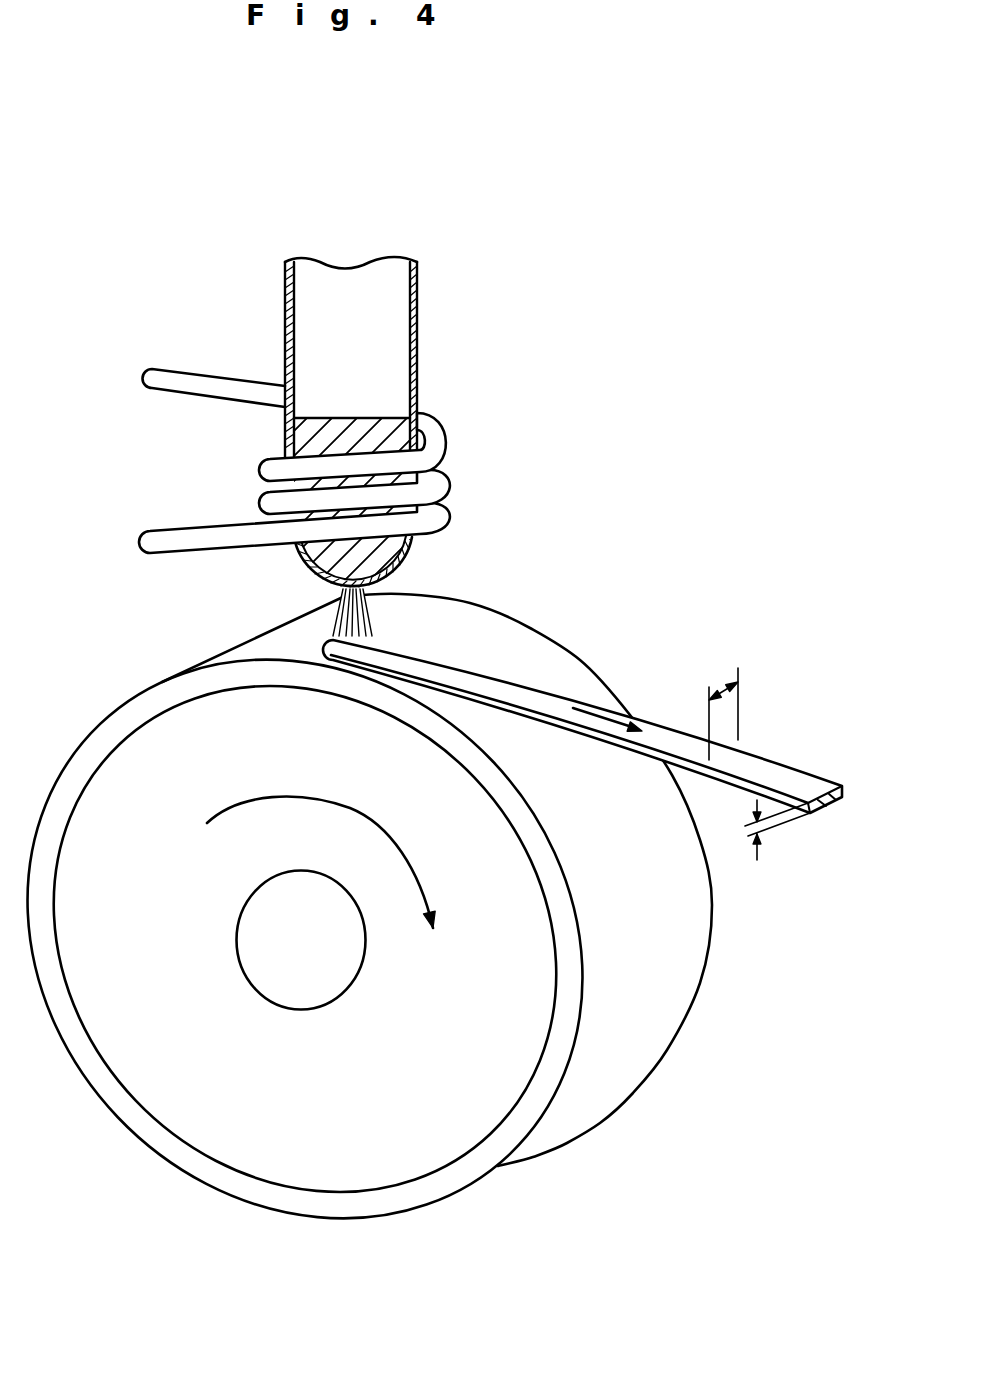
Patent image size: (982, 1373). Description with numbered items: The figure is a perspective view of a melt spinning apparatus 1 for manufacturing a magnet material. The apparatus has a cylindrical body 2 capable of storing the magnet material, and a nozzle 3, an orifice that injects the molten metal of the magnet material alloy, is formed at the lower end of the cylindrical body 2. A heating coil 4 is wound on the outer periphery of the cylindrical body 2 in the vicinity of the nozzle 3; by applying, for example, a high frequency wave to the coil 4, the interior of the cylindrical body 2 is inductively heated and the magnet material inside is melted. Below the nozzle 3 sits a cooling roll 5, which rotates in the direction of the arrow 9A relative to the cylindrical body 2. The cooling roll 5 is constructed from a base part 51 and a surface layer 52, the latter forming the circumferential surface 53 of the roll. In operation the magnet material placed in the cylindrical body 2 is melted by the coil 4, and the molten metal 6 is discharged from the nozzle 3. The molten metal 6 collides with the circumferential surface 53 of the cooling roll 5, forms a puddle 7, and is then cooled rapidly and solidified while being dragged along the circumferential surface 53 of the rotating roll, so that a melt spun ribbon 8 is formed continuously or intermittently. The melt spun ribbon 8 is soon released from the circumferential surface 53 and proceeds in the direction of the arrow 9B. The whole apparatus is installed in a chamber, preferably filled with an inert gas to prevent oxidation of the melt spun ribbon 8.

The melt spinning apparatus 1 is at (653, 446).
The cylindrical body 2 is at (418, 313).
The nozzle 3 is at (345, 588).
The heating coil 4 is at (450, 478).
The cooling roll 5 is at (430, 1207).
The molten metal 6 is at (383, 560).
The puddle 7 is at (363, 636).
The melt spun ribbon 8 is at (778, 772).
The arrow indicating rotation direction of cooling roll 9A is at (356, 814).
The arrow indicating proceeding direction of melt spun ribbon 9B is at (600, 707).
The base part 51 is at (250, 1130).
The surface layer 52 is at (300, 1197).
The circumferential surface 53 is at (670, 958).